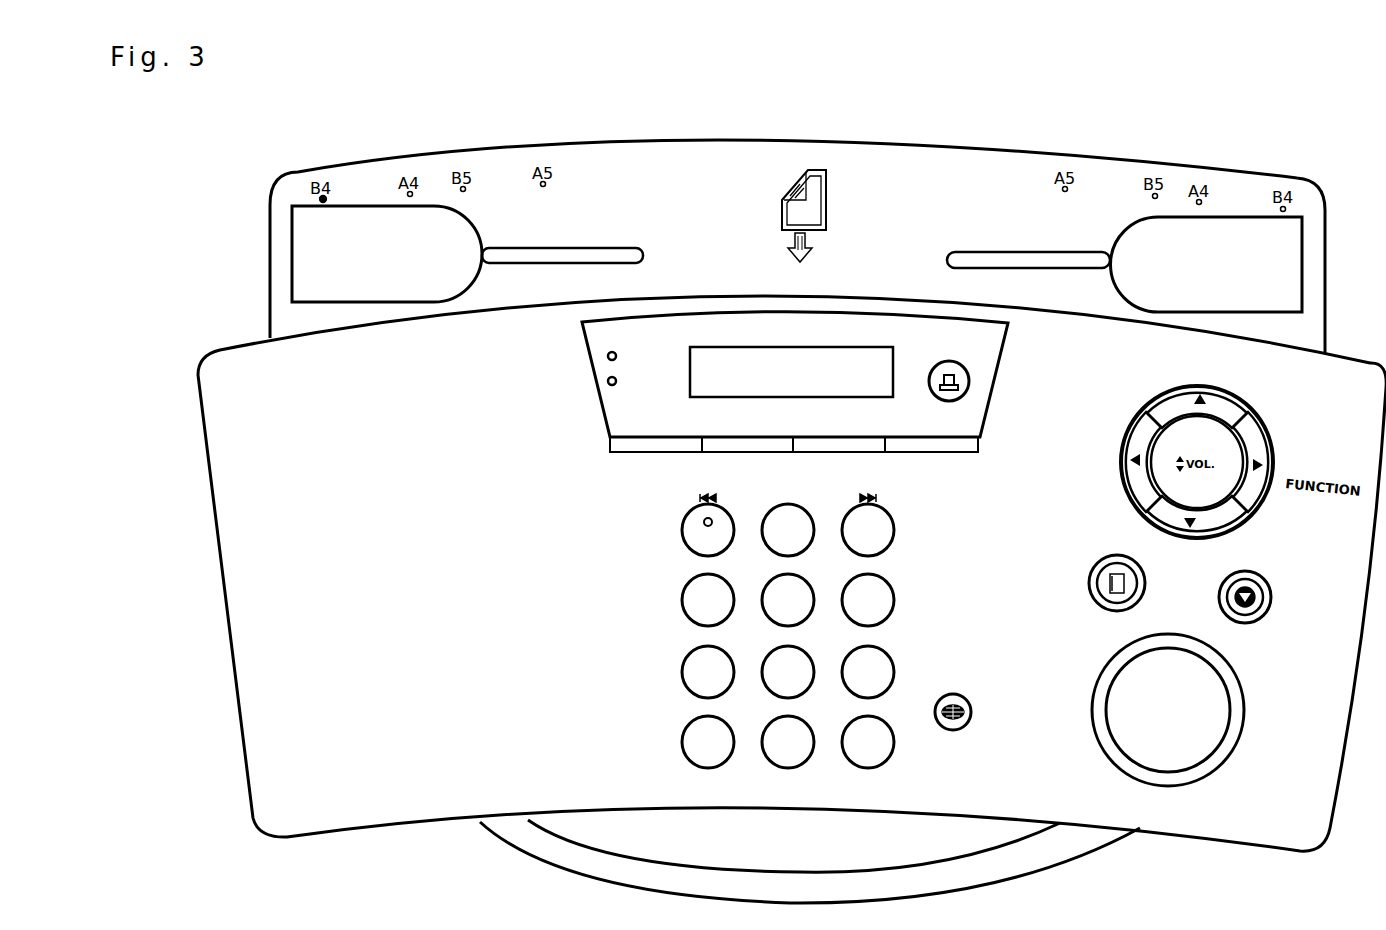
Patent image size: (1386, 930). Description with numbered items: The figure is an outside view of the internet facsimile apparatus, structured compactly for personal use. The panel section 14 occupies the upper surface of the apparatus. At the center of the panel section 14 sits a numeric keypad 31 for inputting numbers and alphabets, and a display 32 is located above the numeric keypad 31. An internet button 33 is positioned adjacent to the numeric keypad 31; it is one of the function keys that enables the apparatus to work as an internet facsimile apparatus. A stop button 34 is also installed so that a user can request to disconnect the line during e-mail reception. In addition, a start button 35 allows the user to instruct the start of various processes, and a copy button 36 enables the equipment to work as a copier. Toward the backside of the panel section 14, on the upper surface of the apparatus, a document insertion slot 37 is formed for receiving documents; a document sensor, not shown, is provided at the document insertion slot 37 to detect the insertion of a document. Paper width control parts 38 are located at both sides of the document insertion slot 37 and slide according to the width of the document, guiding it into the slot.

The panel section 14 is at (232, 480).
The numeric keypad 31 is at (668, 505).
The display 32 is at (620, 407).
The internet button 33 is at (972, 712).
The stop button 34 is at (1266, 590).
The start button 35 is at (1213, 726).
The copy button 36 is at (1095, 580).
The document insertion slot 37 is at (850, 294).
The paper width control parts 38 is at (383, 237).